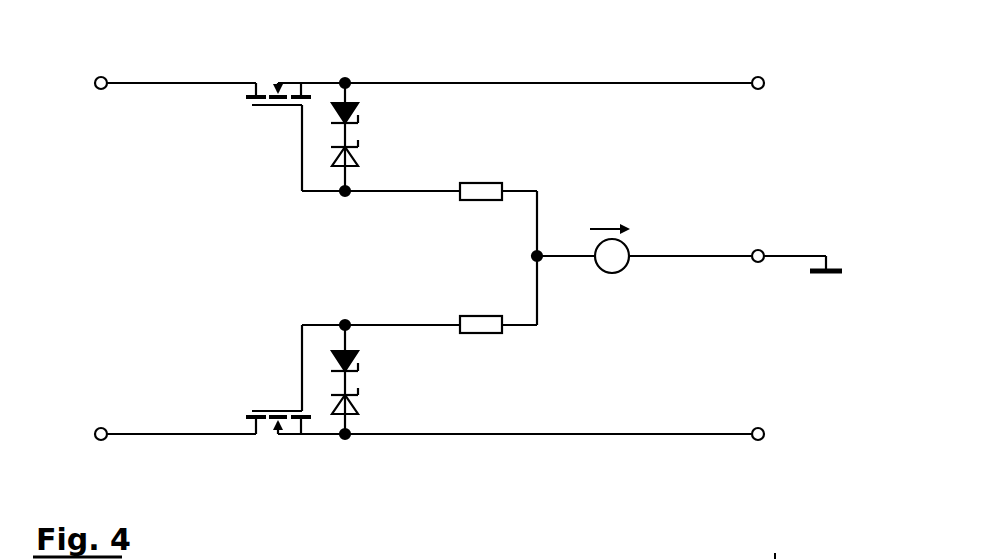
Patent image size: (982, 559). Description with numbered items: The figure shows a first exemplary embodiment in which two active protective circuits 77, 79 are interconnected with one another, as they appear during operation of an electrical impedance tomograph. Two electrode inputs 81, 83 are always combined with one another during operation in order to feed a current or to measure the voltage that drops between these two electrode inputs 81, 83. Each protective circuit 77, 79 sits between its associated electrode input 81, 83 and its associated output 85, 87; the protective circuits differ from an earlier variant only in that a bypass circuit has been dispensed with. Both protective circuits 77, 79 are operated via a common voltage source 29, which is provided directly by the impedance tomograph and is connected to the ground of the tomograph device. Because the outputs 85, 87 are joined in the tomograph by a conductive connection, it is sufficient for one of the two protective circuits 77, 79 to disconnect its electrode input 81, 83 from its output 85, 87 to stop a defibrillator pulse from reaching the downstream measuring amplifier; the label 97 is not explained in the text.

The common voltage source 29 is at (614, 274).
The active protective circuit 77 is at (244, 151).
The active protective circuit 79 is at (244, 366).
The electrode input 81 is at (99, 77).
The electrode input 83 is at (100, 428).
The output 85 is at (752, 82).
The output 87 is at (752, 437).
The circuit portion 97 is at (776, 543).